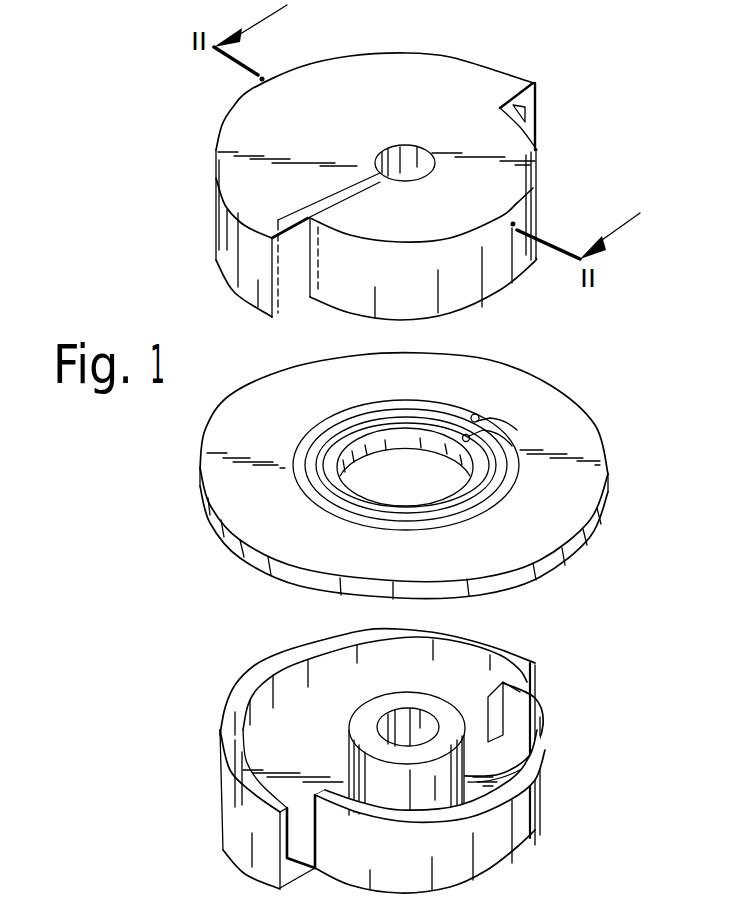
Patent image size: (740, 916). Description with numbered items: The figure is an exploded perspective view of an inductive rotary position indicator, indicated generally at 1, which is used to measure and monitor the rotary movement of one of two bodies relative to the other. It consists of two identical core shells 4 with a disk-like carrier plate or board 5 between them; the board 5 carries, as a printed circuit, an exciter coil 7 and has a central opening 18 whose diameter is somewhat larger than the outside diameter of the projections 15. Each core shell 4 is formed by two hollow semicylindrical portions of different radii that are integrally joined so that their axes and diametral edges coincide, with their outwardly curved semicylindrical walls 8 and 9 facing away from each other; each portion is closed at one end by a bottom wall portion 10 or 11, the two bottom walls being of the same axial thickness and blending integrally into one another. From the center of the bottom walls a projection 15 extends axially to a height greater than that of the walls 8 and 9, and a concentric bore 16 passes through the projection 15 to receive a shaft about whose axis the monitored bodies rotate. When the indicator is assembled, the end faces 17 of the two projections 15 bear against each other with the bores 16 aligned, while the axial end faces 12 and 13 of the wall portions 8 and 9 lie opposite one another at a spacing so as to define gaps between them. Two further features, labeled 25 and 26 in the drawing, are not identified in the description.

The sensor assembly 1 is at (622, 381).
The core shell 4 is at (433, 55).
The carrier plate or board 5 is at (606, 470).
The exciter coil 7 is at (311, 494).
The semicylindrical wall 8 is at (232, 238).
The semicylindrical wall 9 is at (494, 284).
The bottom wall portion 10 is at (249, 127).
The bottom wall portion 11 is at (540, 149).
The axial end face 12 is at (268, 671).
The axial end face 13 is at (535, 745).
The projection 15 is at (458, 772).
The concentric bore 16 is at (410, 167).
The end face 17 is at (360, 736).
The central opening 18 is at (402, 438).
The radial slot 25 is at (276, 322).
The axial groove 26 is at (538, 148).